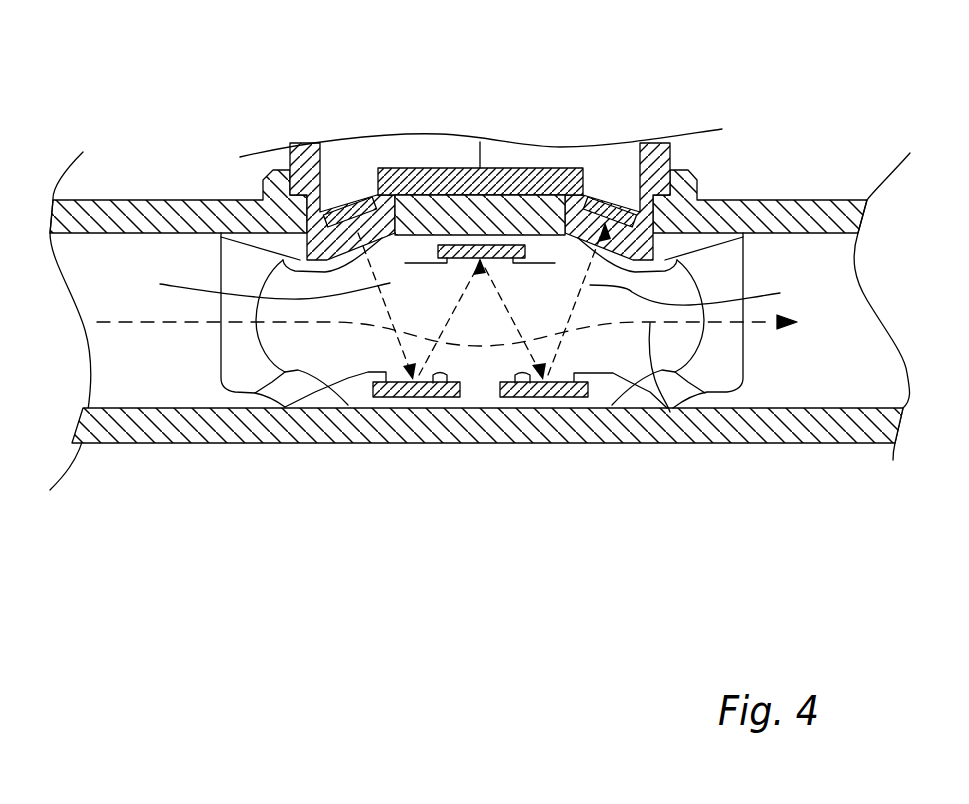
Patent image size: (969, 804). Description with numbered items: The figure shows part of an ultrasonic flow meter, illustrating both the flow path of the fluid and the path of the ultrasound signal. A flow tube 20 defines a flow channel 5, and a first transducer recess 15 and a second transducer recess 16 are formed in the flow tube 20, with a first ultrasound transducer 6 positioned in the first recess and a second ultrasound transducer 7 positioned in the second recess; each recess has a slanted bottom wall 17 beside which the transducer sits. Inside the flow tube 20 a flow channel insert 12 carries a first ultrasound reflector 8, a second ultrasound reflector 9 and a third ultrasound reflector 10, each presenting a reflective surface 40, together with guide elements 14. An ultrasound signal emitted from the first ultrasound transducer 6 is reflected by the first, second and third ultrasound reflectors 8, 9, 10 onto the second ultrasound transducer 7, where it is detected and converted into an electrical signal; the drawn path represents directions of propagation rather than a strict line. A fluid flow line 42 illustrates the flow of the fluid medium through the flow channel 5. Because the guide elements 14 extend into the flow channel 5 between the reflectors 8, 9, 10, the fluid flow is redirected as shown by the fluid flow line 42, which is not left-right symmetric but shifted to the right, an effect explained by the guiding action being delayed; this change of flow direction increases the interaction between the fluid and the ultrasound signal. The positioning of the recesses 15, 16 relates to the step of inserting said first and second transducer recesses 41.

The flow channel 5 is at (160, 380).
The first ultrasound transducer 6 is at (367, 197).
The second ultrasound transducer 7 is at (600, 198).
The first ultrasound reflector 8 is at (412, 397).
The second ultrasound reflector 9 is at (458, 168).
The third ultrasound reflector 10 is at (550, 382).
The flow channel insert 12 is at (715, 358).
The guide element 14 is at (418, 250).
The first transducer recess 15 is at (330, 197).
The second transducer recess 16 is at (627, 196).
The slanted bottom wall 17 is at (283, 266).
The flow tube 20 is at (137, 200).
The reflective surface 40 is at (447, 383).
The inserting said first and second transducer recesses 41 is at (469, 290).
The fluid flow line 42 is at (138, 323).